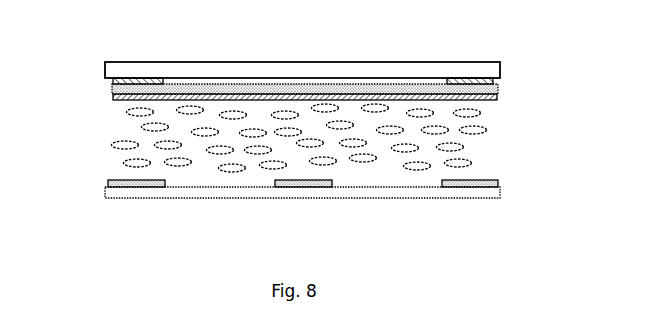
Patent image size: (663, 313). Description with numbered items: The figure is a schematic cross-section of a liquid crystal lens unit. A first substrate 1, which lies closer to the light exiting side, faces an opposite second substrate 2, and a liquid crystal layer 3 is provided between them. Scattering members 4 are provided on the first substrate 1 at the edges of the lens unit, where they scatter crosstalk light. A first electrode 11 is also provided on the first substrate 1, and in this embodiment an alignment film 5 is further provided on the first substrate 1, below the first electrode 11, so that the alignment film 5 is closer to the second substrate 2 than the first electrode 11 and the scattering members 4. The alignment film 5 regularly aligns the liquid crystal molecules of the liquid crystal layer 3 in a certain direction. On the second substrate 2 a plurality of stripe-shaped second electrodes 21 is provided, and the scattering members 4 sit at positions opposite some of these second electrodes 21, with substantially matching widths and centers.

The first substrate 1 is at (338, 68).
The second substrate 2 is at (337, 198).
The liquid crystal layer 3 is at (462, 149).
The scattering members 4 is at (112, 81).
The alignment film 5 is at (470, 100).
The first electrode 11 is at (113, 97).
The second electrodes 21 is at (108, 183).